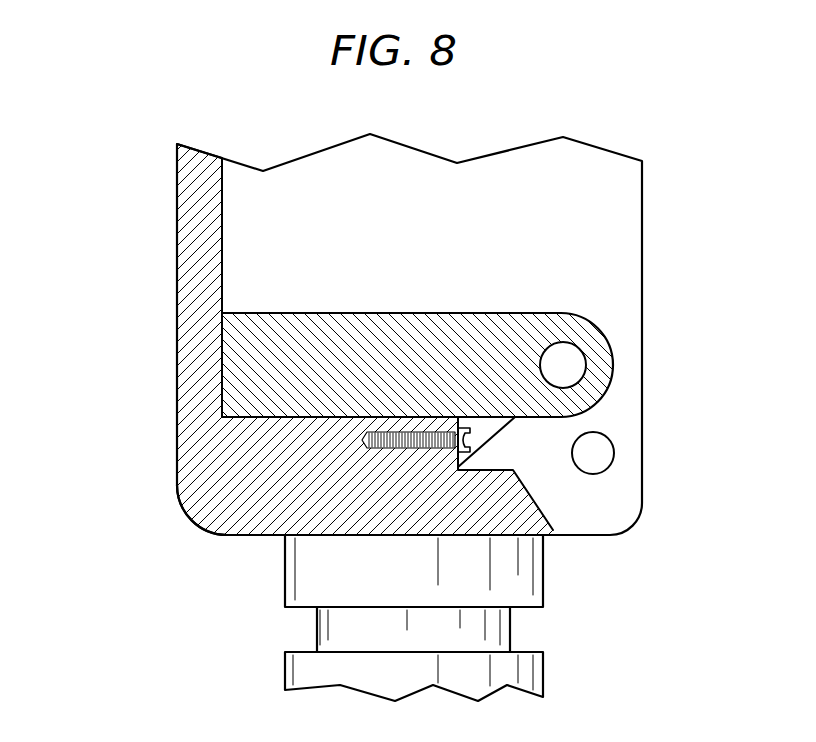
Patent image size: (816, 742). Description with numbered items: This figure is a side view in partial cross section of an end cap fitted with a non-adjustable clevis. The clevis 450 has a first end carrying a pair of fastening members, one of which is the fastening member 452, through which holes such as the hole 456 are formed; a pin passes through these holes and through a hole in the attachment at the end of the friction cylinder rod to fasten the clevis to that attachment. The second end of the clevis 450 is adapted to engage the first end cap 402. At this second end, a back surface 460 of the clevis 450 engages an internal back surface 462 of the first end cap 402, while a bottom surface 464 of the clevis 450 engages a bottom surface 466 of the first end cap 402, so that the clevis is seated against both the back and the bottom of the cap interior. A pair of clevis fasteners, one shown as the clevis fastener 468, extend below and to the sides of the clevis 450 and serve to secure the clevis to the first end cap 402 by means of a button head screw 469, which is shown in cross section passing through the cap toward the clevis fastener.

The first end cap 402 is at (150, 252).
The clevis 450 is at (460, 345).
The fastening member 452 is at (603, 396).
The hole 456 is at (570, 367).
The back surface 460 is at (215, 360).
The internal back surface 462 is at (218, 407).
The bottom surface 464 is at (257, 420).
The bottom surface 466 is at (303, 420).
The clevis fastener 468 is at (435, 464).
The button head screw 469 is at (473, 426).